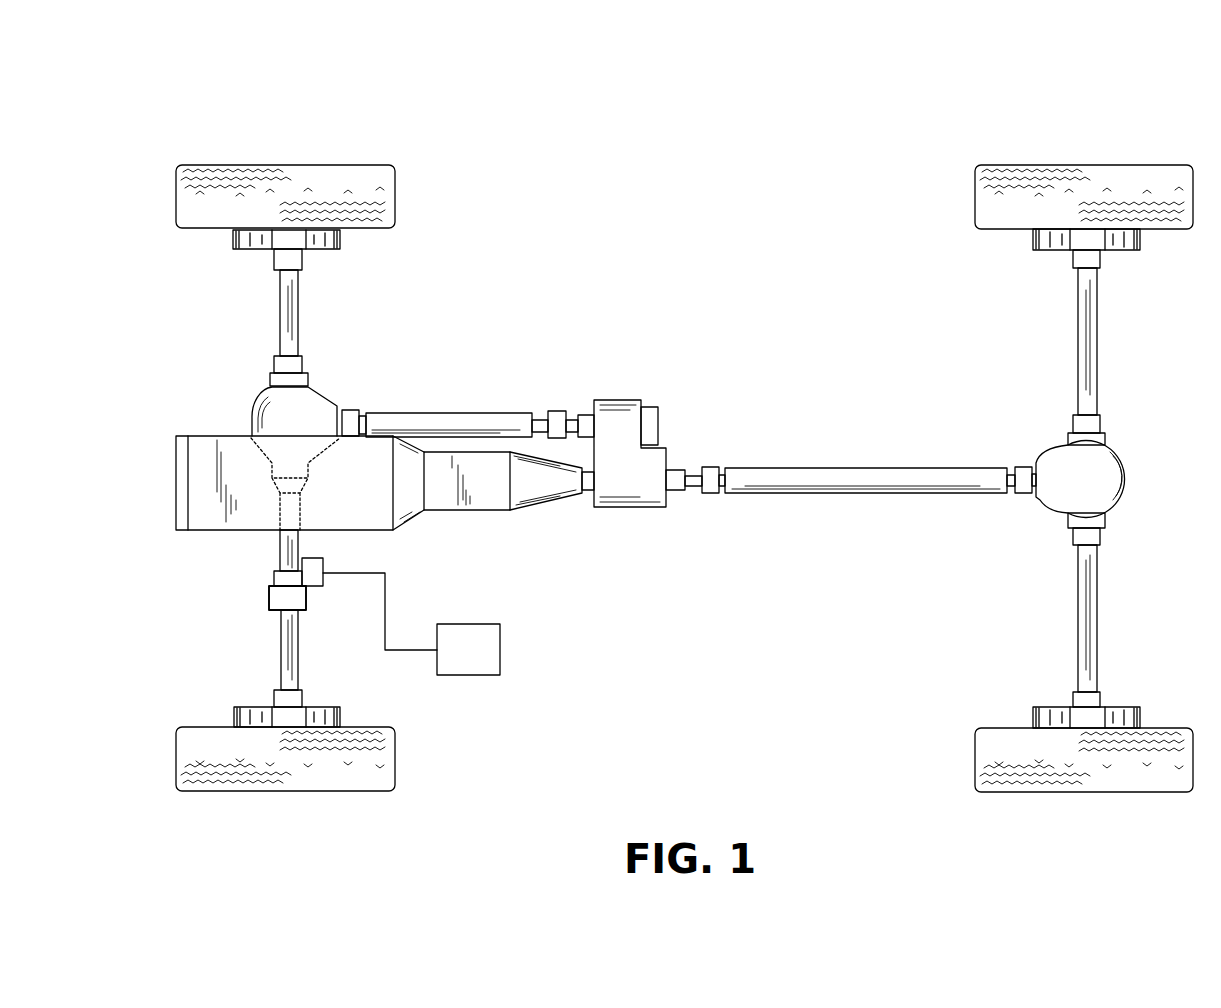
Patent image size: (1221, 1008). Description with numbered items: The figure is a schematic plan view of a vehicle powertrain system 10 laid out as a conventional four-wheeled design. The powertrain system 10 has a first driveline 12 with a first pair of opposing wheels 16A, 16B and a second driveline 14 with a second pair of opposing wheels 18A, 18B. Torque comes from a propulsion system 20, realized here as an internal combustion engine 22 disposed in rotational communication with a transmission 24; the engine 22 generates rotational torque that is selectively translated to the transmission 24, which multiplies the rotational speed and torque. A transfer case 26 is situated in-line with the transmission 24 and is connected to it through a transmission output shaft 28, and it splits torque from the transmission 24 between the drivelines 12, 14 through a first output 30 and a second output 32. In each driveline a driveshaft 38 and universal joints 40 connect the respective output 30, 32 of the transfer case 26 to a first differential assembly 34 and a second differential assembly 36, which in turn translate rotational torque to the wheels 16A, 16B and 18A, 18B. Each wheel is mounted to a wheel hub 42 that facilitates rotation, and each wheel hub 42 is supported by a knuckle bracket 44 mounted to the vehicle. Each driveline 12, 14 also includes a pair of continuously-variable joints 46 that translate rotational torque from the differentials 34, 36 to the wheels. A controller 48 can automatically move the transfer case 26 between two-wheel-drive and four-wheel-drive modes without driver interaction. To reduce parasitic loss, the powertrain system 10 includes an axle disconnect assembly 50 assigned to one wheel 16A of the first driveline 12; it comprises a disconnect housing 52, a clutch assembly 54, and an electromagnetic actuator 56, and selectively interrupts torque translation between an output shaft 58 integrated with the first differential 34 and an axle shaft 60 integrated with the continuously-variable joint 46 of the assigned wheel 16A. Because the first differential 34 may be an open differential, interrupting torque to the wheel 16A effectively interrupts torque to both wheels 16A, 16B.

The vehicle powertrain system 10 is at (614, 172).
The first driveline 12 is at (177, 145).
The second driveline 14 is at (976, 145).
The wheel 16A is at (383, 185).
The wheel 16B is at (383, 772).
The wheel 18A is at (985, 216).
The wheel 18B is at (985, 748).
The propulsion system 20 is at (397, 533).
The internal combustion engine 22 is at (344, 508).
The transmission 24 is at (474, 486).
The transfer case 26 is at (611, 478).
The transmission output shaft 28 is at (590, 491).
The first output 30 is at (590, 414).
The second output 32 is at (677, 491).
The first differential assembly 34 is at (279, 420).
The second differential assembly 36 is at (1073, 490).
The driveshaft 38 is at (452, 412).
The universal joint 40 is at (348, 410).
The wheel hub 42 is at (268, 253).
The knuckle bracket 44 is at (232, 236).
The continuously-variable joint 46 is at (290, 322).
The controller 48 is at (457, 661).
The axle disconnect assembly 50 is at (310, 592).
The disconnect housing 52 is at (300, 605).
The clutch assembly 54 is at (287, 598).
The electromagnetic actuator 56 is at (313, 563).
The output shaft 58 is at (283, 562).
The axle shaft 60 is at (288, 612).